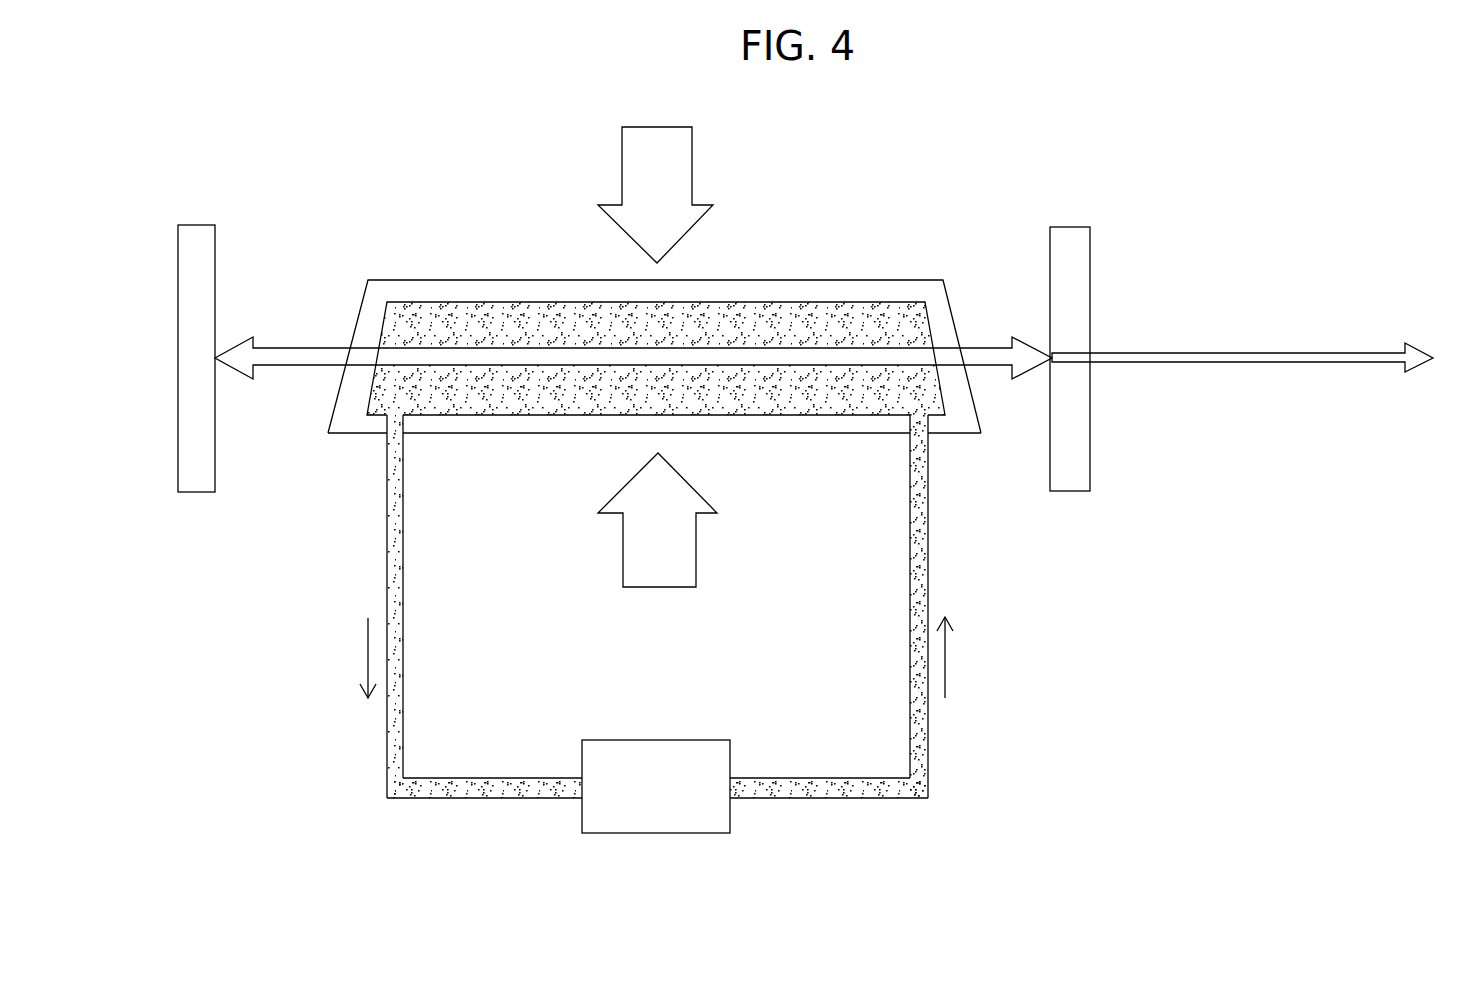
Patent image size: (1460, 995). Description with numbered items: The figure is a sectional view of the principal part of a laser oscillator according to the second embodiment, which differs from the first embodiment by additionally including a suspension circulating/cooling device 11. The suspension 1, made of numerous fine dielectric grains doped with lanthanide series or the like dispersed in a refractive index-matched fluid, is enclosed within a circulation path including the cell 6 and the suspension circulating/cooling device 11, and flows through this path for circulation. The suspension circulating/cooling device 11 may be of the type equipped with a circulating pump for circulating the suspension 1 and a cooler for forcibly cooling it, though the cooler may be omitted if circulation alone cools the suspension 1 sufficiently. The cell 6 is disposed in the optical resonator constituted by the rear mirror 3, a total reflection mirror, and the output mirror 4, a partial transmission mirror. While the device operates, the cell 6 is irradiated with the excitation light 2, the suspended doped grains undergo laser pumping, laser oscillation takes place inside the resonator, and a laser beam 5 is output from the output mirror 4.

The suspension 1 is at (610, 387).
The excitation light 2 is at (682, 172).
The rear mirror 3 is at (197, 237).
The output mirror 4 is at (1068, 235).
The laser beam 5 is at (1197, 363).
The cell 6 is at (958, 436).
The suspension circulating/cooling device 11 is at (730, 817).